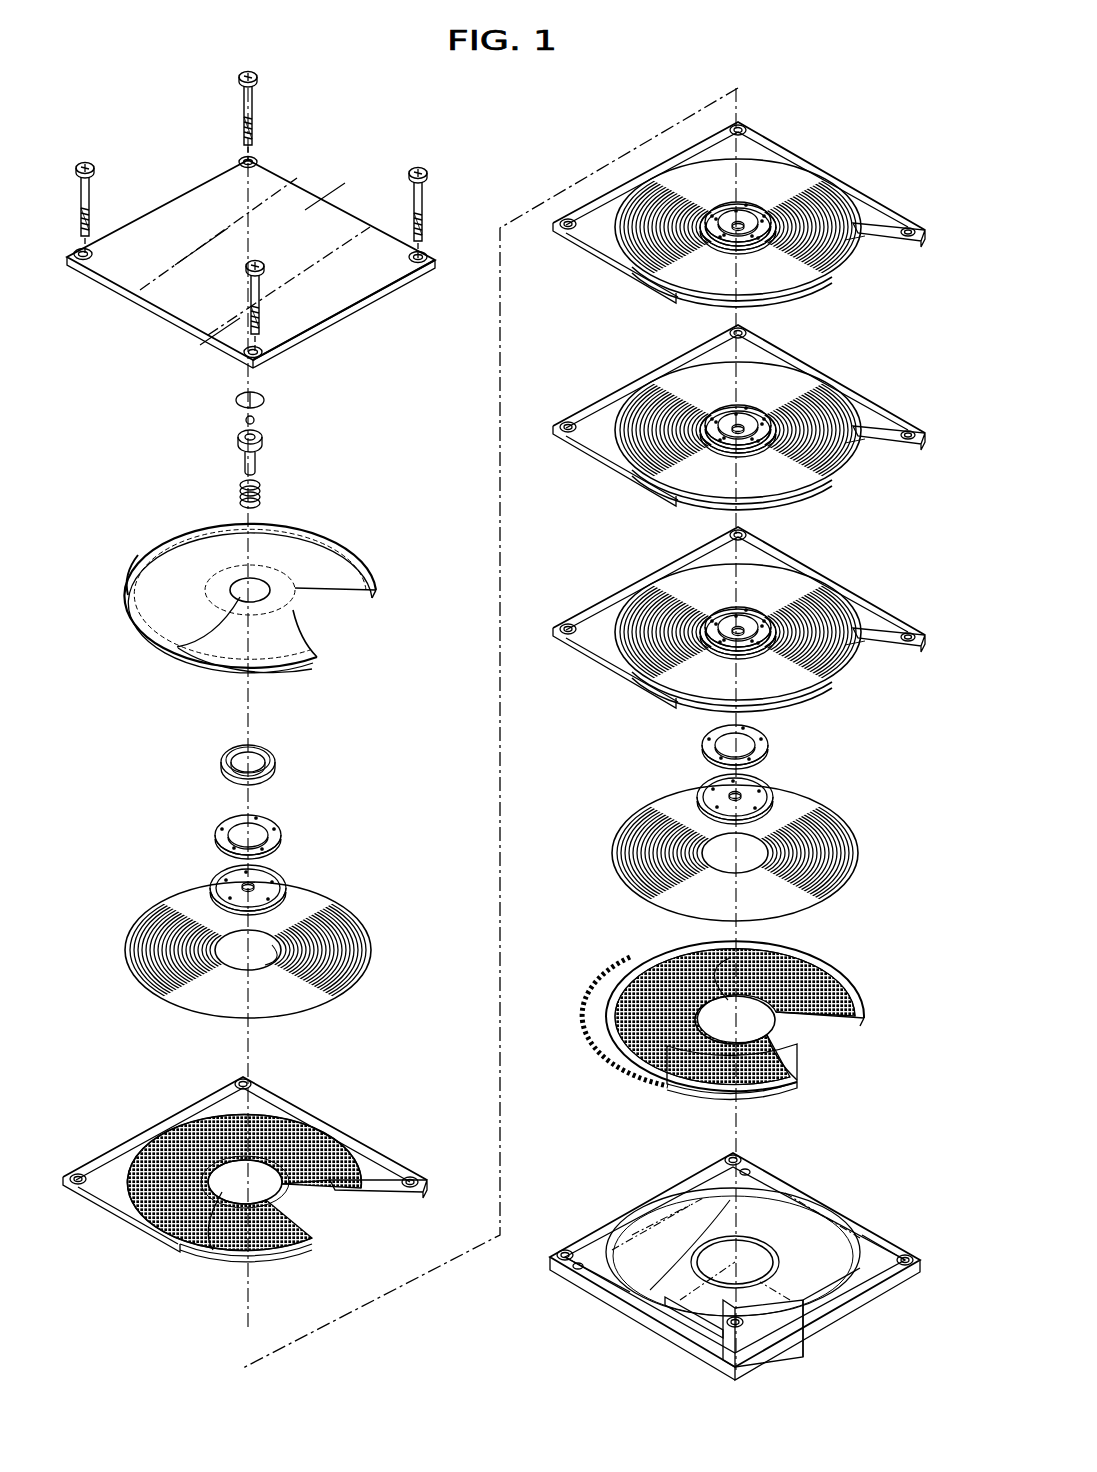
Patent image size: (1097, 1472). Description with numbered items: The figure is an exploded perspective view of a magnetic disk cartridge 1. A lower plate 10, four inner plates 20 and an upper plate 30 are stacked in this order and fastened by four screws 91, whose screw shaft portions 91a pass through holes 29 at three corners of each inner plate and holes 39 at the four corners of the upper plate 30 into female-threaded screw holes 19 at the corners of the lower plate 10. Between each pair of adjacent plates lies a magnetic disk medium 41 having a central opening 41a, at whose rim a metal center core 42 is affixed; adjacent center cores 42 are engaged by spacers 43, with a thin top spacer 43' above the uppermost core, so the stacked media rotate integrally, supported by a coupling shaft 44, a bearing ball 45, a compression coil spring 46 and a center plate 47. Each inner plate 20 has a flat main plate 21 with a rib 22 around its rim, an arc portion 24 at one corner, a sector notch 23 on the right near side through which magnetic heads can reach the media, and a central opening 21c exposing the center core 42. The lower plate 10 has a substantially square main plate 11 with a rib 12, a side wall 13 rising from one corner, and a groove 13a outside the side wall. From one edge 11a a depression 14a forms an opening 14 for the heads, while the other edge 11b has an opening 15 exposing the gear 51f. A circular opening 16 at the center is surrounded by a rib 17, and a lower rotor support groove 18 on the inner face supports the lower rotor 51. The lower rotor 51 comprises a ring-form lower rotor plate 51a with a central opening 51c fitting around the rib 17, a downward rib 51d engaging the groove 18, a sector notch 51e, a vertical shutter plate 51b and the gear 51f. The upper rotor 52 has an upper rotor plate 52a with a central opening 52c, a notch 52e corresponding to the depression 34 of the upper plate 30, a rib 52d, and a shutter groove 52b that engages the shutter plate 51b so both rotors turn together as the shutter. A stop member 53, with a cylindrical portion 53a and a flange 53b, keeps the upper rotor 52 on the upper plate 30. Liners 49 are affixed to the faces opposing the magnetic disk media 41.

The magnetic disk cartridge 1 is at (491, 150).
The lower plate 10 is at (722, 1246).
The main plate 11 is at (580, 1245).
The one edge 11a is at (860, 1290).
The other edge 11b is at (630, 1320).
The rib 12 is at (845, 1220).
The side wall 13 is at (770, 1355).
The groove 13a is at (700, 1333).
The opening 14 is at (810, 1325).
The depression 14a is at (860, 1325).
The opening 15 is at (640, 1305).
The circular opening 16 is at (615, 1290).
The rib 17 is at (715, 1245).
The lower rotor support groove 18 is at (700, 1200).
The screw holes 19 is at (728, 1155).
The inner plates 20 is at (488, 714).
The main plate 21 is at (235, 1177).
The central opening 21c is at (222, 1255).
The rib 22 is at (885, 198).
The notch 23 is at (875, 258).
The arc portion 24 is at (270, 1257).
The holes 29 is at (238, 1082).
The upper plate 30 is at (251, 236).
The depression 34 is at (375, 312).
The holes 39 is at (240, 158).
The magnetic disk medium 41 is at (518, 598).
The opening 41a is at (265, 965).
The center core 42 is at (282, 875).
The spacer 43 is at (767, 745).
The top spacer 43' is at (280, 834).
The coupling shaft 44 is at (258, 459).
The bearing ball 45 is at (256, 420).
The compression coil spring 46 is at (262, 497).
The center plate 47 is at (266, 400).
The liners 49 is at (150, 548).
The lower rotor 51 is at (747, 1008).
The lower rotor plate 51a is at (865, 985).
The shutter plate 51b is at (780, 1080).
The central opening 51c is at (712, 980).
The rib 51d is at (868, 1020).
The notch 51e is at (855, 1040).
The gear 51f is at (612, 1020).
The upper rotor 52 is at (275, 594).
The upper rotor plate 52a is at (365, 548).
The shutter groove 52b is at (215, 672).
The central opening 52c is at (177, 647).
The rib 52d is at (378, 590).
The notch 52e is at (340, 628).
The stop member 53 is at (259, 748).
The cylindrical portion 53a is at (282, 760).
The flange 53b is at (226, 762).
The screws 91 is at (92, 163).
The screw shaft portions 91a is at (89, 208).